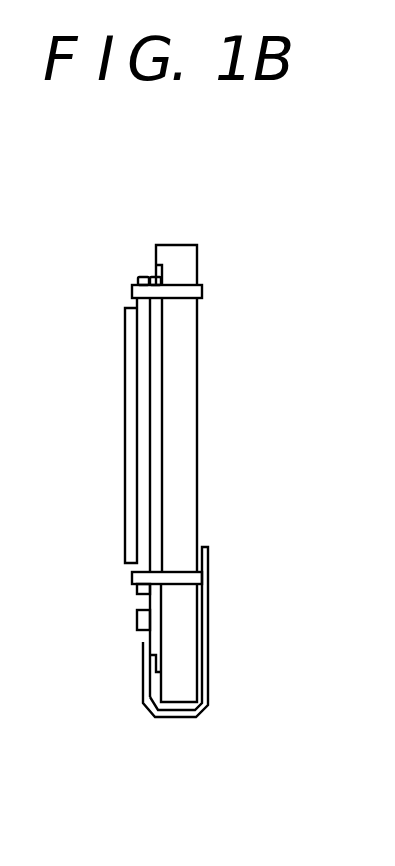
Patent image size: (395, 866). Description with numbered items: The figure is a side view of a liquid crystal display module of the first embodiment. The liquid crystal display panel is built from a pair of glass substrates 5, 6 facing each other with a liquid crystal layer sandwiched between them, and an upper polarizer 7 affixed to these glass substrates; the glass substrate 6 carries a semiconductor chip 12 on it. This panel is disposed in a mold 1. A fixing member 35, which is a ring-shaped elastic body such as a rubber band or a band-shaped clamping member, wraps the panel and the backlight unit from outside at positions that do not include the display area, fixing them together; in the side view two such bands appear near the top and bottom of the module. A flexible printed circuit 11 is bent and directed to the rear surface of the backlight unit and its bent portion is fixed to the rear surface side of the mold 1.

The mold 1 is at (191, 262).
The glass substrate 5 is at (142, 275).
The glass substrate 6 is at (161, 362).
The upper polarizer 7 is at (127, 342).
The flexible printed circuit 11 is at (143, 683).
The semiconductor chip 12 is at (136, 620).
The fixing member 35 is at (204, 291).